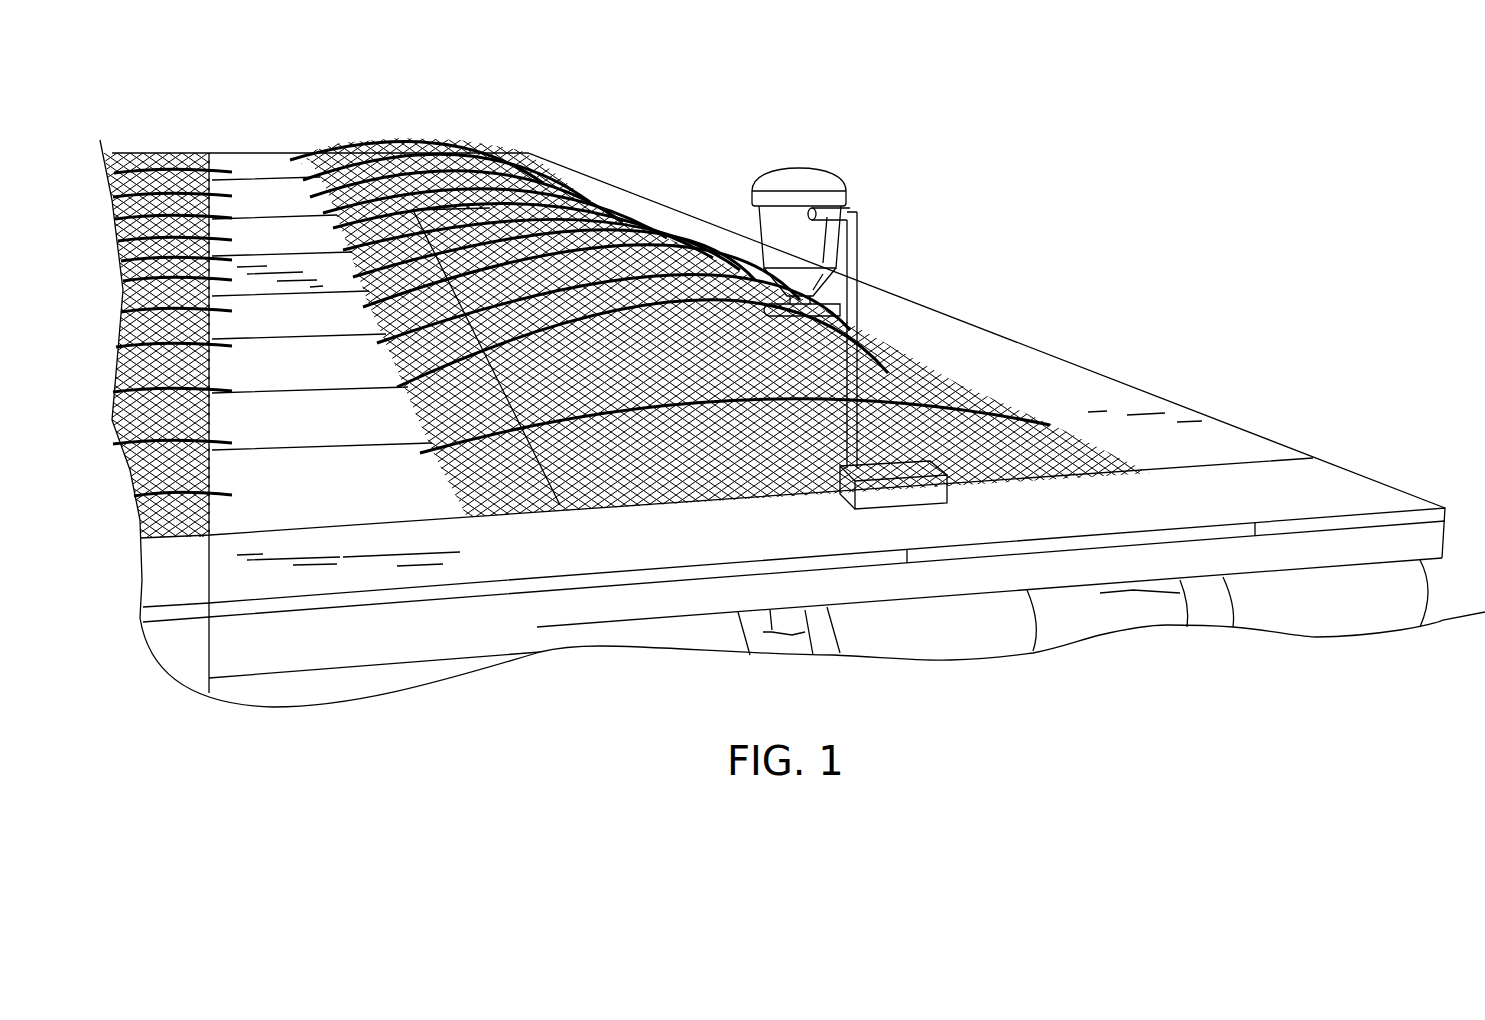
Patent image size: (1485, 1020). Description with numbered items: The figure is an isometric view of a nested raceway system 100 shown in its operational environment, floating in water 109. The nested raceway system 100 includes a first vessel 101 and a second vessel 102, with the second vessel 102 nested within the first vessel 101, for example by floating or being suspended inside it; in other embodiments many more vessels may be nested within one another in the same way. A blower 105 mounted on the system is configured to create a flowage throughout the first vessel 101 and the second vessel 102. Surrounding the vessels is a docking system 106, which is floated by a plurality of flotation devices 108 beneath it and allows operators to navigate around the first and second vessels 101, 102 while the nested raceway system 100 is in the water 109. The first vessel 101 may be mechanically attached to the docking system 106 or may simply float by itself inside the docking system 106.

The nested raceway system 100 is at (983, 173).
The first vessel 101 is at (987, 422).
The second vessel 102 is at (888, 373).
The blower 105 is at (905, 493).
The docking system 106 is at (1430, 547).
The flotation devices 108 is at (1383, 612).
The water 109 is at (1240, 686).